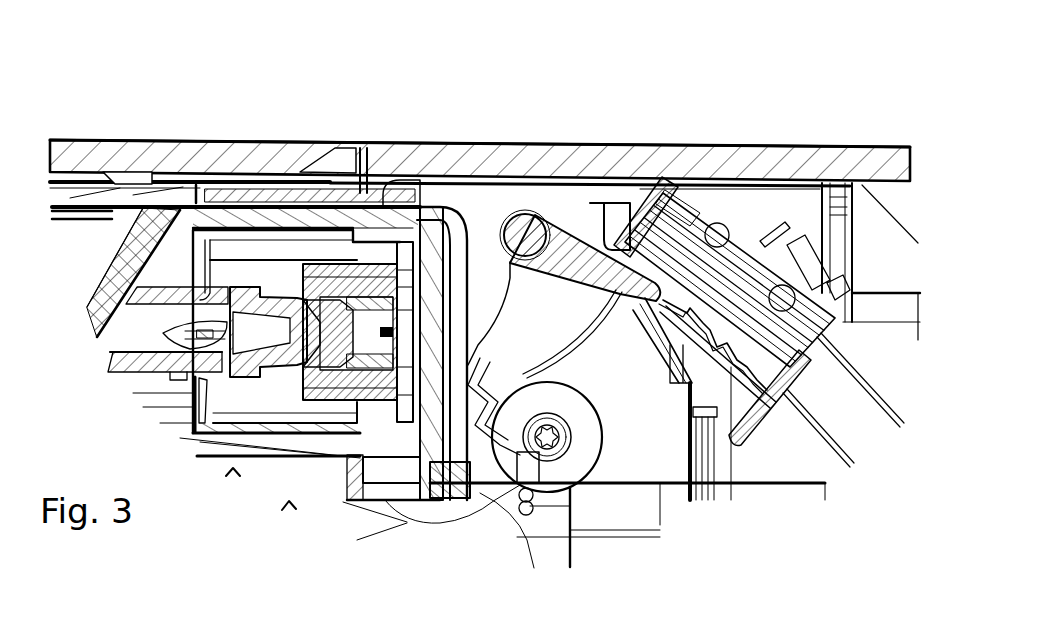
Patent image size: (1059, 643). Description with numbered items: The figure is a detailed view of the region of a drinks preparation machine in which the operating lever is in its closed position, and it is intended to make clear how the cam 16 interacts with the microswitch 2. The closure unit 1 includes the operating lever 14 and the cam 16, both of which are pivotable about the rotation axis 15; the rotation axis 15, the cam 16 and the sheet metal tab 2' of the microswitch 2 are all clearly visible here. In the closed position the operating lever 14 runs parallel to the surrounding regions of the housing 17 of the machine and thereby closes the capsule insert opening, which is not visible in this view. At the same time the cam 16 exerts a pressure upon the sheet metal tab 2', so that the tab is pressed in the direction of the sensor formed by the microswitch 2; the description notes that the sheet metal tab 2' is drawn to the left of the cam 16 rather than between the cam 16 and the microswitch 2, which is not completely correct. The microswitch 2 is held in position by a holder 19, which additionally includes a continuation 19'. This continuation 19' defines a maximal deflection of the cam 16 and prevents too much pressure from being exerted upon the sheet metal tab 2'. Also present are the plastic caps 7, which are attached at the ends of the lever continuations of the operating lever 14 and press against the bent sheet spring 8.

The closure unit 1 is at (525, 215).
The microswitch 2 is at (772, 265).
The sheet metal tab 2' is at (682, 458).
The plastic caps 7 is at (623, 218).
The bent sheet spring 8 is at (604, 333).
The operating lever 14 is at (123, 157).
The rotation axis 15 is at (486, 231).
The cam 16 is at (570, 257).
The housing 17 is at (813, 147).
The holder 19 is at (695, 130).
The continuation 19' is at (654, 136).